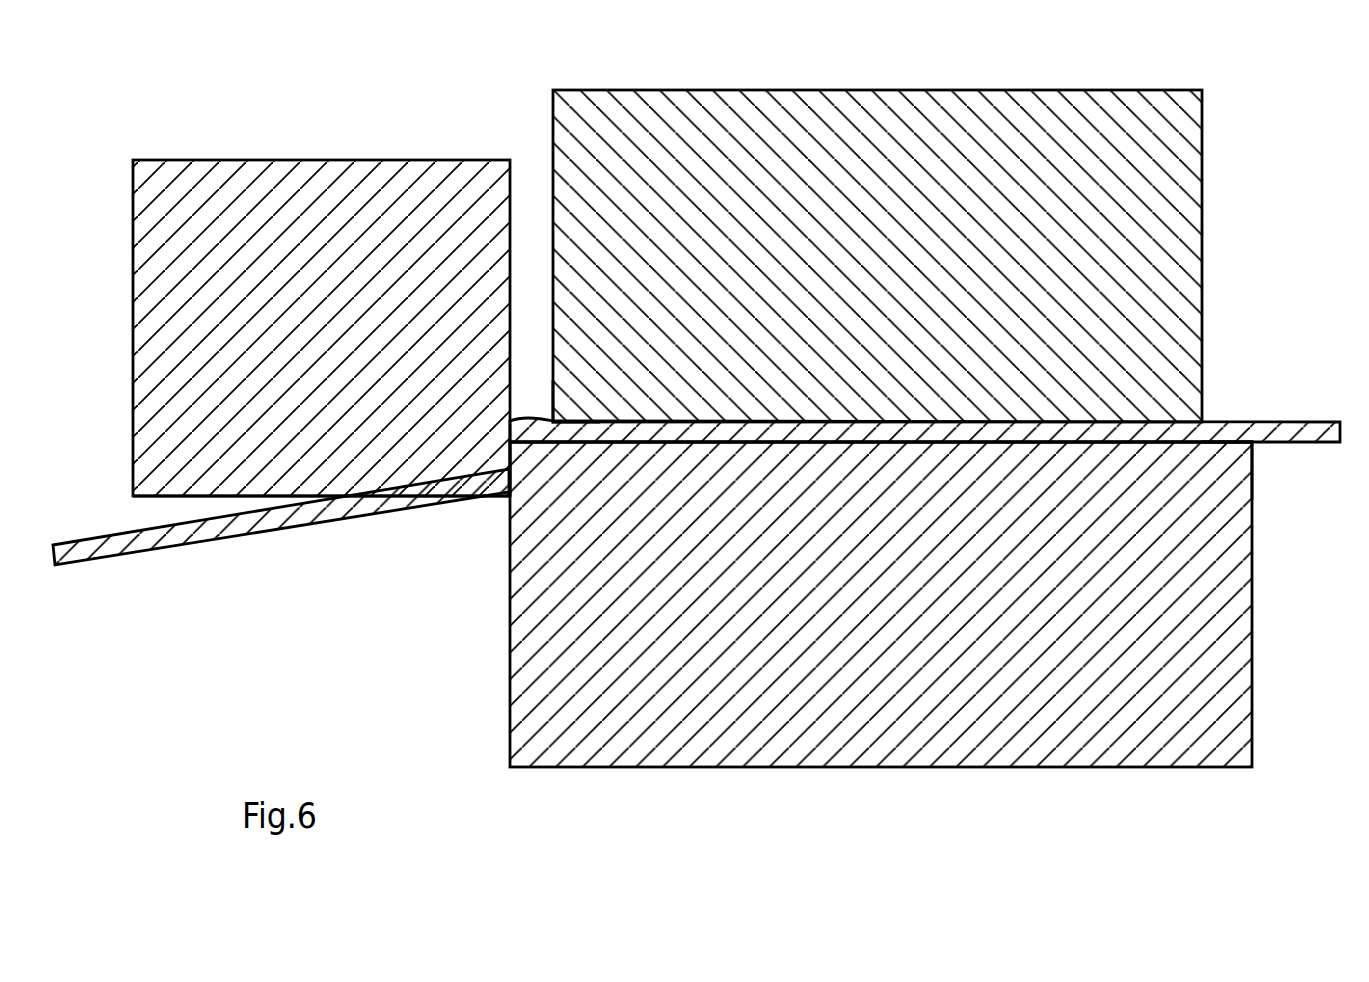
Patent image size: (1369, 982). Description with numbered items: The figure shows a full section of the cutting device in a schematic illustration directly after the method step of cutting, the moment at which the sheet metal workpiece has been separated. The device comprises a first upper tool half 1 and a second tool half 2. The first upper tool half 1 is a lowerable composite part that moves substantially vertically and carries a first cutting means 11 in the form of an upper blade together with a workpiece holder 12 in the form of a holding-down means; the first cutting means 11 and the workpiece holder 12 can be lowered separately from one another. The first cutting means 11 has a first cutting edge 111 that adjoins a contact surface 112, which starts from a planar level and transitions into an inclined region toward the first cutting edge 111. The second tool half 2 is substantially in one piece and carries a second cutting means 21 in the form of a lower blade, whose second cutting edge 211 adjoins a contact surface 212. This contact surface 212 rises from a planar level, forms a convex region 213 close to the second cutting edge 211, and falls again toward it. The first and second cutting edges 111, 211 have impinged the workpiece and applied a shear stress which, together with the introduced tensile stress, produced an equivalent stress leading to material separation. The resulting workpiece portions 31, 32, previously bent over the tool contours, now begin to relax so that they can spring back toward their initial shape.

The first upper tool half 1 is at (1262, 138).
The second tool half 2 is at (1282, 713).
The first cutting means 11 is at (240, 185).
The workpiece holder 12 is at (1017, 118).
The second cutting means 21 is at (945, 738).
The workpiece portion 31 is at (222, 530).
The workpiece portion 32 is at (1312, 430).
The first cutting edge 111 is at (510, 470).
The contact surface 112 is at (250, 498).
The second cutting edge 211 is at (510, 440).
The contact surface 212 is at (1213, 440).
The convex region 213 is at (555, 421).